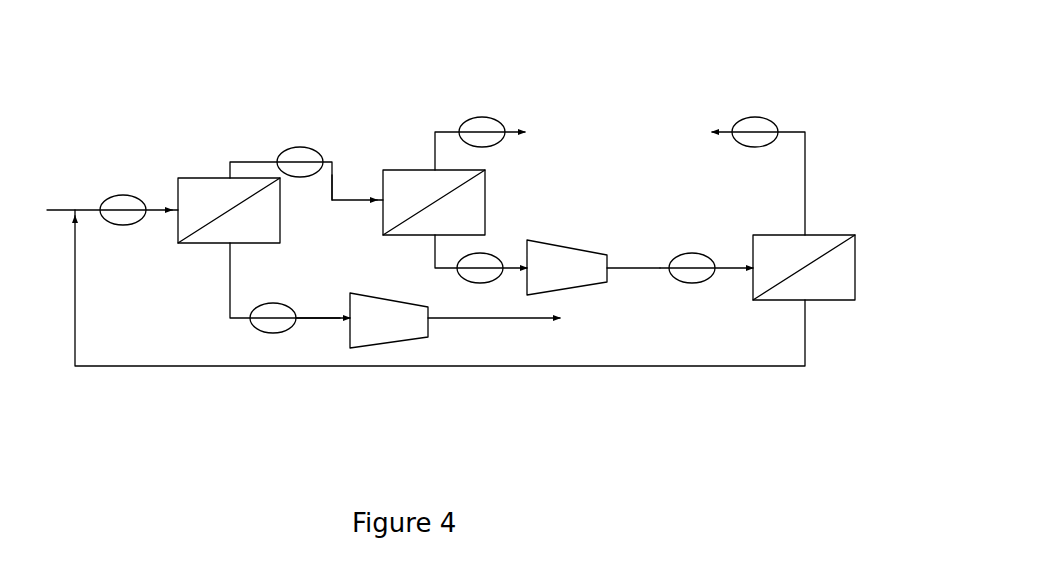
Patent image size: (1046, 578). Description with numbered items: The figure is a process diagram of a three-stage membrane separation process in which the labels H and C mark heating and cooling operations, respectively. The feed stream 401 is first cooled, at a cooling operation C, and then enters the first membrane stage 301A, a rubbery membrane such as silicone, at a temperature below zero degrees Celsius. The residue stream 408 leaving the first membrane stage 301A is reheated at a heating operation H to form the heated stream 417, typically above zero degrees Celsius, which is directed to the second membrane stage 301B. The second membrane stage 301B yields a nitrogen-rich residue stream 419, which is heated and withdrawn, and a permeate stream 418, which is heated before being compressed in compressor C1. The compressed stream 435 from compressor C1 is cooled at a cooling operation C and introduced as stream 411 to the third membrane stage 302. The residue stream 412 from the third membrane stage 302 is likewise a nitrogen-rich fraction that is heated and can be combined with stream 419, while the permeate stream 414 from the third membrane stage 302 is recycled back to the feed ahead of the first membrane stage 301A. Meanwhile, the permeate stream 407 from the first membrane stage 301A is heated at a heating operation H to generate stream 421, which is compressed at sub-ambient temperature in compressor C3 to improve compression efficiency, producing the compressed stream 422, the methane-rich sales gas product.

The feed stream 401 is at (52, 208).
The first membrane stage 301A is at (196, 188).
The residue stream 408 is at (231, 160).
The heated residue stream 417 is at (335, 178).
The second membrane stage 301B is at (481, 202).
The residue stream 419 is at (443, 130).
The permeate stream 418 is at (435, 252).
The permeate stream 407 is at (230, 272).
The heated permeate stream 421 is at (310, 320).
The compressed product stream 422 is at (483, 320).
The compressed stream 435 is at (625, 259).
The cooled compressed stream 411 is at (723, 270).
The residue stream 412 is at (805, 188).
The third membrane stage 302 is at (828, 283).
The permeate stream 414 is at (750, 367).
The compressor C1 is at (573, 275).
The compressor C3 is at (405, 336).
The heating operation H is at (300, 147).
The cooling operation C is at (125, 225).